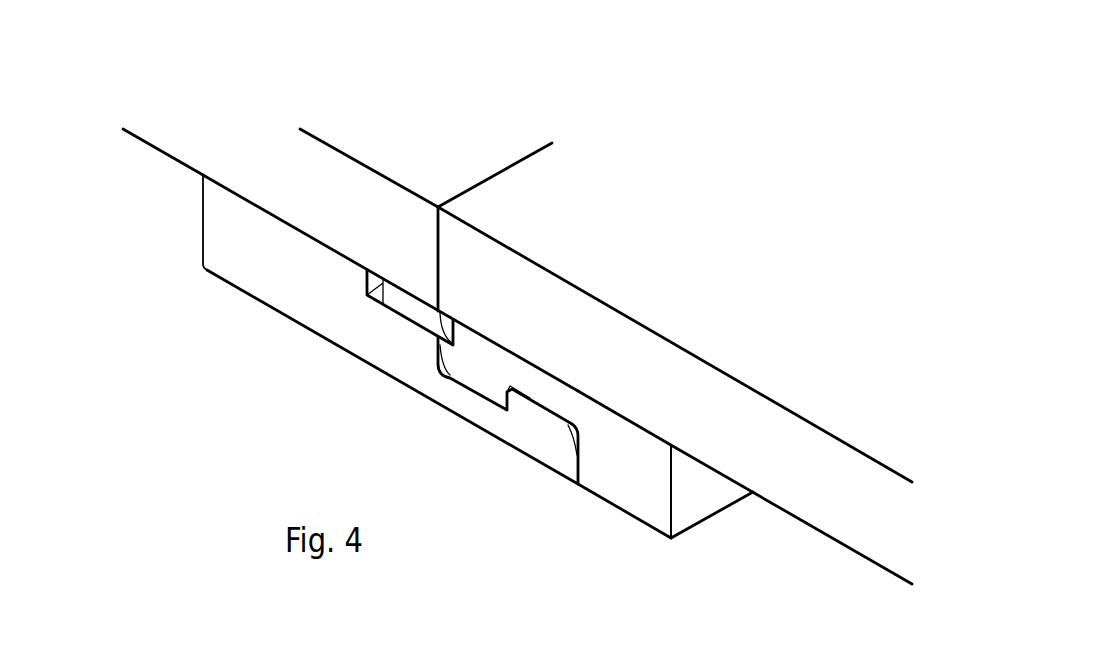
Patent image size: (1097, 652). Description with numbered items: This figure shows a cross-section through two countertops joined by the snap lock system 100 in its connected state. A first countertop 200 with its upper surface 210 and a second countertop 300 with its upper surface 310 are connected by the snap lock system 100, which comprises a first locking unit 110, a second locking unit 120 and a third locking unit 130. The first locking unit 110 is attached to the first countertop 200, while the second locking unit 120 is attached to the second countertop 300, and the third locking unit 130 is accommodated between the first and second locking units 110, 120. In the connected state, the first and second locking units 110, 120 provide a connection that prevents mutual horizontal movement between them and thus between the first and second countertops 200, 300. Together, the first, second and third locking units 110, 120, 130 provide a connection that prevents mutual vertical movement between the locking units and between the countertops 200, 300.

The snap lock system 100 is at (276, 354).
The first locking unit 110 is at (253, 258).
The second locking unit 120 is at (633, 480).
The third locking unit 130 is at (413, 310).
The first countertop 200 is at (218, 142).
The upper surface of the first countertop 210 is at (429, 140).
The second countertop 300 is at (830, 480).
The upper surface of the second countertop 310 is at (592, 248).